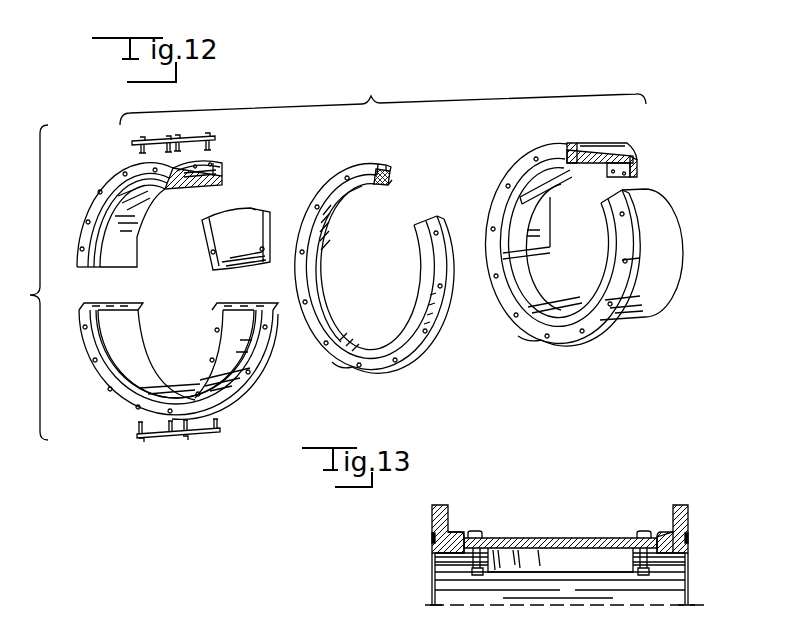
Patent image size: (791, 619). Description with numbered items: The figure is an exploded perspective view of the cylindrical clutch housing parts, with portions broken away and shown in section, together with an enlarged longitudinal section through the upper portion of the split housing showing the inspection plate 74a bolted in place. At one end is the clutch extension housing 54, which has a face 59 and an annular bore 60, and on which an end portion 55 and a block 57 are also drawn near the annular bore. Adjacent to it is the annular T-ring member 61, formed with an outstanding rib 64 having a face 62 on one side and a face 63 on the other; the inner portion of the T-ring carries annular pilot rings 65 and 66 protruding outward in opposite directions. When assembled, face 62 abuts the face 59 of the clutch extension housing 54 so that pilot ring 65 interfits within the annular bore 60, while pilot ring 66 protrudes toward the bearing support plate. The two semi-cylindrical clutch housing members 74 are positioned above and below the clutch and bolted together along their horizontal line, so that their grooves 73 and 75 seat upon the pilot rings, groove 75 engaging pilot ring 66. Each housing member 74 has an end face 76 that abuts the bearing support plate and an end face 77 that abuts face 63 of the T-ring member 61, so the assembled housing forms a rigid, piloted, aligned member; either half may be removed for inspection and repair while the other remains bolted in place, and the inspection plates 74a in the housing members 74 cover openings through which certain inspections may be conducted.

In FIG. 12, the clutch extension housing 54 is at (601, 149).
In FIG. 12, the segment end plate 55 is at (642, 177).
In FIG. 12, the segment block 57 is at (641, 168).
In FIG. 12, the face of the clutch extension housing 59 is at (563, 344).
In FIG. 12, the annular bore 60 is at (502, 275).
In FIG. 12, the annular T-ring member 61 is at (381, 194).
In FIG. 12, the face of the rib 62 is at (389, 171).
In FIG. 12, the face of the rib 63 is at (365, 167).
In FIG. 12, the outstanding rib 64 is at (444, 238).
In FIG. 12, the annular pilot ring 65 is at (391, 180).
In FIG. 12, the annular pilot ring 66 is at (362, 186).
In FIG. 12, the groove 73 is at (122, 392).
In FIG. 13, the groove 73 is at (432, 547).
In FIG. 12, the semi-cylindrical clutch housing member 74 is at (137, 246).
In FIG. 13, the semi-cylindrical clutch housing member 74 is at (688, 598).
In FIG. 12, the inspection plate 74a is at (230, 457).
In FIG. 13, the inspection plate 74a is at (573, 536).
In FIG. 12, the groove 75 is at (225, 181).
In FIG. 13, the groove 75 is at (690, 542).
In FIG. 12, the face of the housing member 76 is at (111, 178).
In FIG. 13, the face of the housing member 76 is at (432, 509).
In FIG. 12, the face of the housing member 77 is at (224, 170).
In FIG. 13, the face of the housing member 77 is at (690, 511).